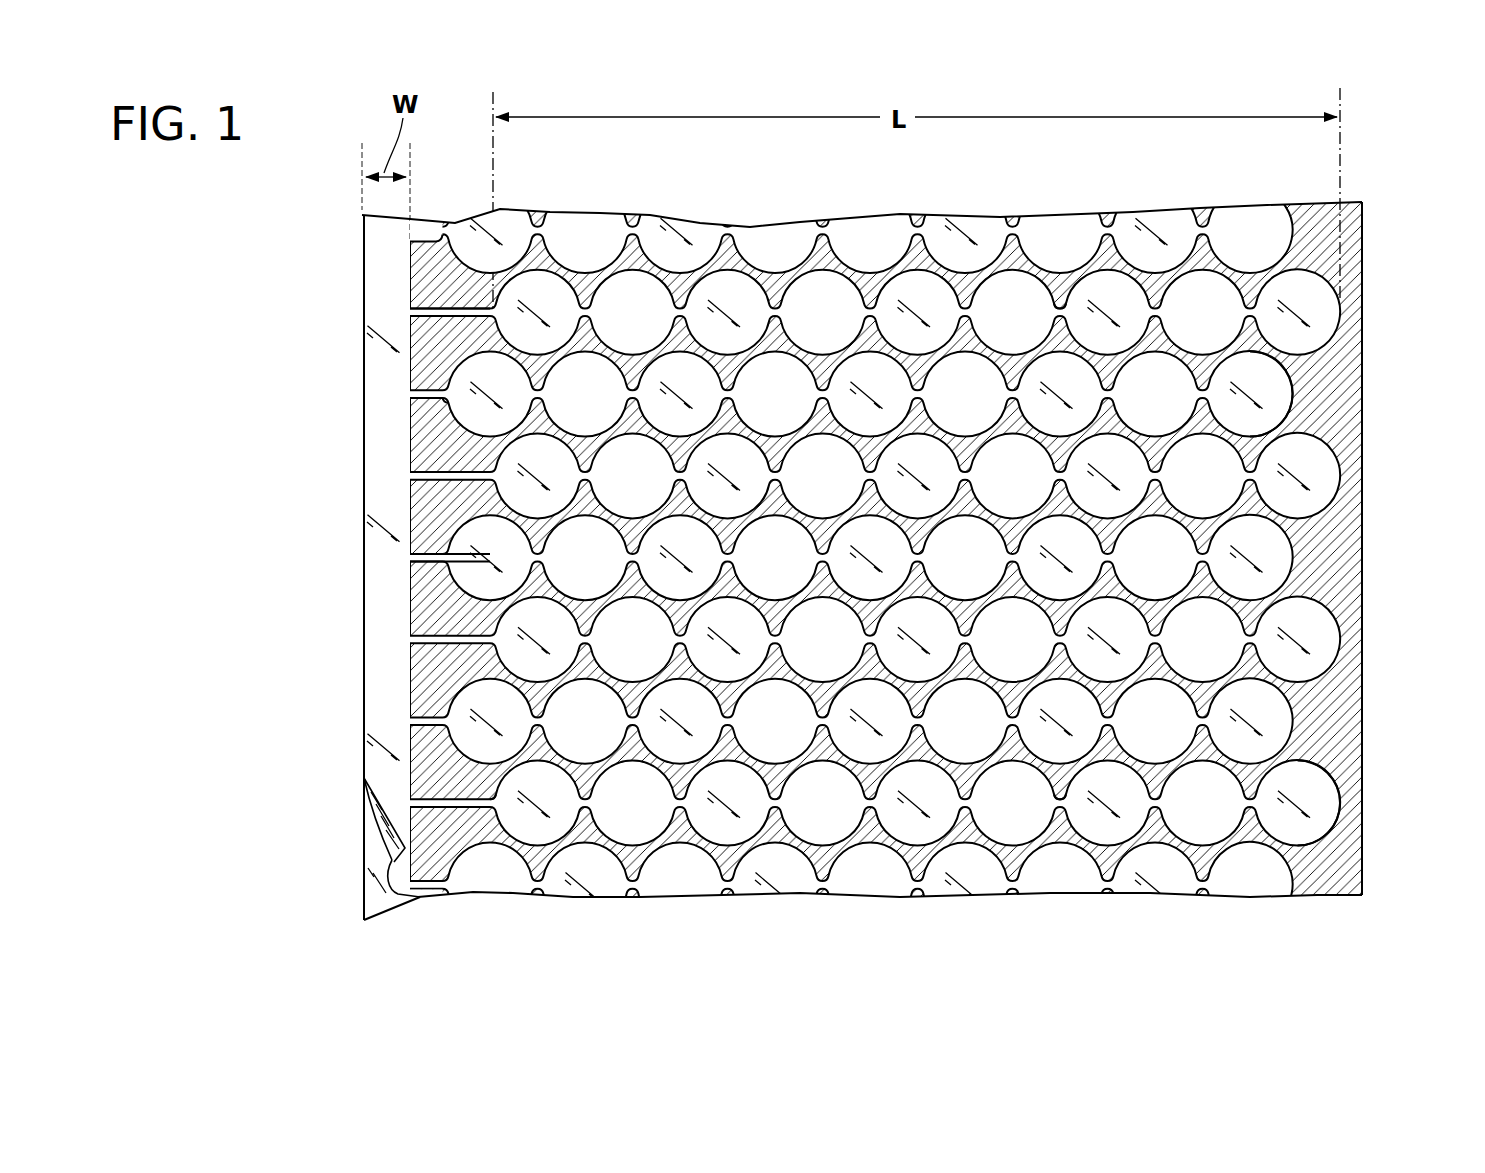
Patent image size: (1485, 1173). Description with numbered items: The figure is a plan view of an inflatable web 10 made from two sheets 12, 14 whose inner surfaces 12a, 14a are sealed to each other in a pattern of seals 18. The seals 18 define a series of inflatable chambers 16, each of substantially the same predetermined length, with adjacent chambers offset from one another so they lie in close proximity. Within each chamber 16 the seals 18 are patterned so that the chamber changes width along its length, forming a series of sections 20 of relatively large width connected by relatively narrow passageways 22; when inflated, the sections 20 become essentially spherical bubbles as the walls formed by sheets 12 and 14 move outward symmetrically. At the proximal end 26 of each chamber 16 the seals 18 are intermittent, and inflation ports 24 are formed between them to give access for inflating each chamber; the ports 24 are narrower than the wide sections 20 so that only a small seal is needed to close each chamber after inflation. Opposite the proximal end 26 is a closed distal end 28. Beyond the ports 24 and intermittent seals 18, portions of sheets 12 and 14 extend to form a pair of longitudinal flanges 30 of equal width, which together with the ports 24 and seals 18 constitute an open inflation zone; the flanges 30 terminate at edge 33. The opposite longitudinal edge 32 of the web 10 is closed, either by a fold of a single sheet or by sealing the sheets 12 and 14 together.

The inflatable web 10 is at (1398, 222).
The sheet 12 is at (400, 866).
The inner surface 12a is at (379, 830).
The sheet 14 is at (381, 924).
The inner surface 14a is at (367, 893).
The inflatable chamber 16 is at (838, 331).
The seal 18 is at (428, 437).
The section of relatively large width 20 is at (1107, 295).
The passageway 22 is at (1056, 314).
The inflation port 24 is at (412, 316).
The proximal end 26 is at (437, 389).
The distal end 28 is at (1297, 394).
The longitudinal flange 30 is at (393, 857).
The closed edge 32 is at (1366, 546).
The edge 33 is at (361, 657).